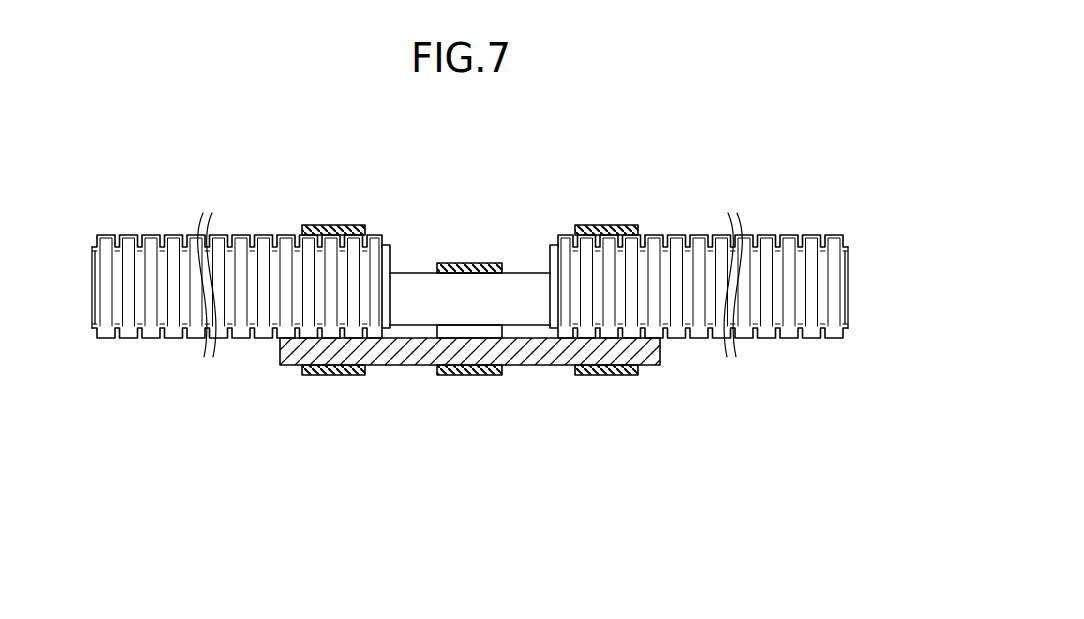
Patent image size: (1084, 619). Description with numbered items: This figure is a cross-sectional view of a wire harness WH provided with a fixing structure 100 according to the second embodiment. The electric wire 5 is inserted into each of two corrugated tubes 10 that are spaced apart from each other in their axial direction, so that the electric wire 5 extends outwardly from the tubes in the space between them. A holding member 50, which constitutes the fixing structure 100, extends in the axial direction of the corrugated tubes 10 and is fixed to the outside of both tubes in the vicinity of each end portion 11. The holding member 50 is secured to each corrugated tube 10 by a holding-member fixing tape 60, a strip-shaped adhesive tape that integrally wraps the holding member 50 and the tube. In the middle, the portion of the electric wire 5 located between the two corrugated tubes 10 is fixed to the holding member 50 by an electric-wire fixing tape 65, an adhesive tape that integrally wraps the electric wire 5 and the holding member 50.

The wire harness WH is at (715, 153).
The fixing structure 100 is at (308, 408).
The corrugated tube 10 is at (173, 234).
The end portion 11 is at (390, 255).
The electric wire 5 is at (515, 290).
The holding member 50 is at (390, 366).
The holding-member fixing tape 60 is at (325, 225).
The electric-wire fixing tape 65 is at (468, 263).